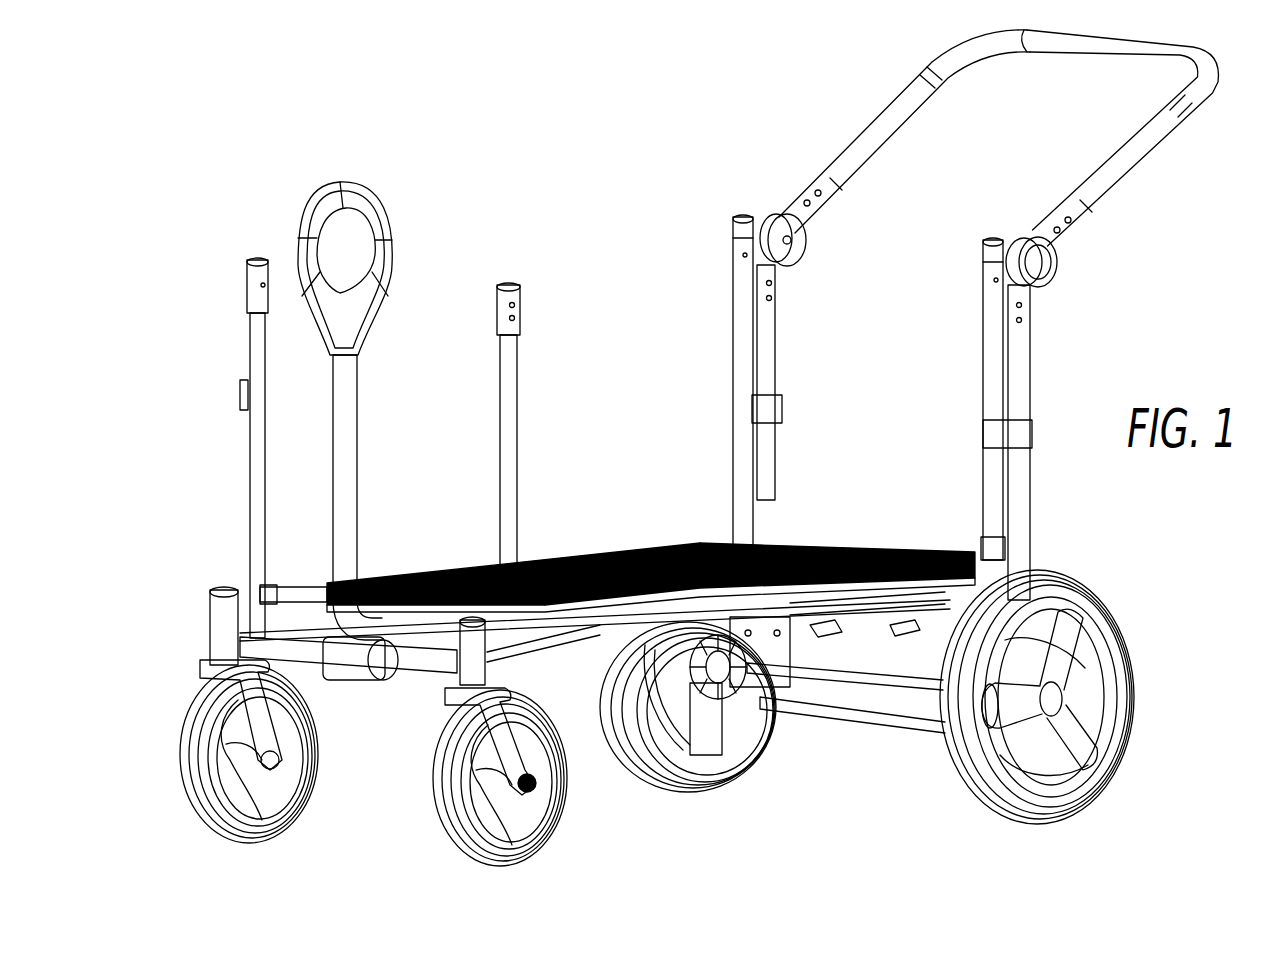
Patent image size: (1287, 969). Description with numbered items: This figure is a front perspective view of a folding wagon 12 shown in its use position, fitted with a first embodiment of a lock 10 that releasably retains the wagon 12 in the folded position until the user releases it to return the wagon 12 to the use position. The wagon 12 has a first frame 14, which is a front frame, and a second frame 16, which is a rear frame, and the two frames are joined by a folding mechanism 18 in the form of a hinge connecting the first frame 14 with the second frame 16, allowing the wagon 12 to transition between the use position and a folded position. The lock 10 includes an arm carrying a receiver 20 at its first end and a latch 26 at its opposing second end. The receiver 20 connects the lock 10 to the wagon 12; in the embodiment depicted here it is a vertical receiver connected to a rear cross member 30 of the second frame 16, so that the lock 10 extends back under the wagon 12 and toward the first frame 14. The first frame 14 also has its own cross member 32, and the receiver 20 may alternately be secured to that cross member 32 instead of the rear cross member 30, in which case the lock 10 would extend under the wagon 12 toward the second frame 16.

The lock 10 is at (875, 640).
The folding wagon 12 is at (542, 245).
The first frame 14 is at (249, 518).
The second frame 16 is at (1000, 490).
The folding mechanism 18 is at (542, 632).
The receiver 20 is at (930, 630).
The latch 26 is at (812, 632).
The rear cross member 30 is at (945, 632).
The cross member 32 is at (437, 663).